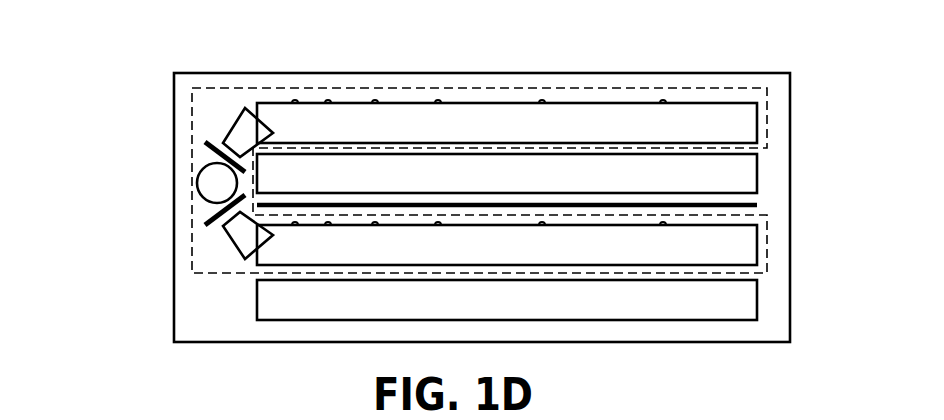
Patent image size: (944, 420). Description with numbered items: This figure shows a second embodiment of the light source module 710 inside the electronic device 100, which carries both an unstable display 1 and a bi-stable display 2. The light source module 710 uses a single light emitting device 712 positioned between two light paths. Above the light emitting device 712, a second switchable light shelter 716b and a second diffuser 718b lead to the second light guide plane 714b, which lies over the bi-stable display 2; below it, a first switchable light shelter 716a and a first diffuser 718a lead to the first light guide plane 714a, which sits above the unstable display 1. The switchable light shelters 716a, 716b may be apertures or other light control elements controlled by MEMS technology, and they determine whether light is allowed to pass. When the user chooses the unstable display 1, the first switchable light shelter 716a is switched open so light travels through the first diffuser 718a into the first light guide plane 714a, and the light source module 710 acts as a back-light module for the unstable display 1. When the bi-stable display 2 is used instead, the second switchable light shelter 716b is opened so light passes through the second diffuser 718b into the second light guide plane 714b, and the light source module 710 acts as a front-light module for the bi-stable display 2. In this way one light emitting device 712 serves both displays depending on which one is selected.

The electronic device 100 is at (172, 322).
The light source module 710 is at (201, 88).
The light emitting device 712 is at (203, 183).
The first light guide plane 714a is at (758, 245).
The second light guide plane 714b is at (758, 123).
The first switchable light shelter 716a is at (205, 224).
The second switchable light shelter 716b is at (205, 142).
The first diffuser 718a is at (231, 242).
The second diffuser 718b is at (237, 129).
The unstable display 1 is at (758, 300).
The bi-stable display 2 is at (758, 177).